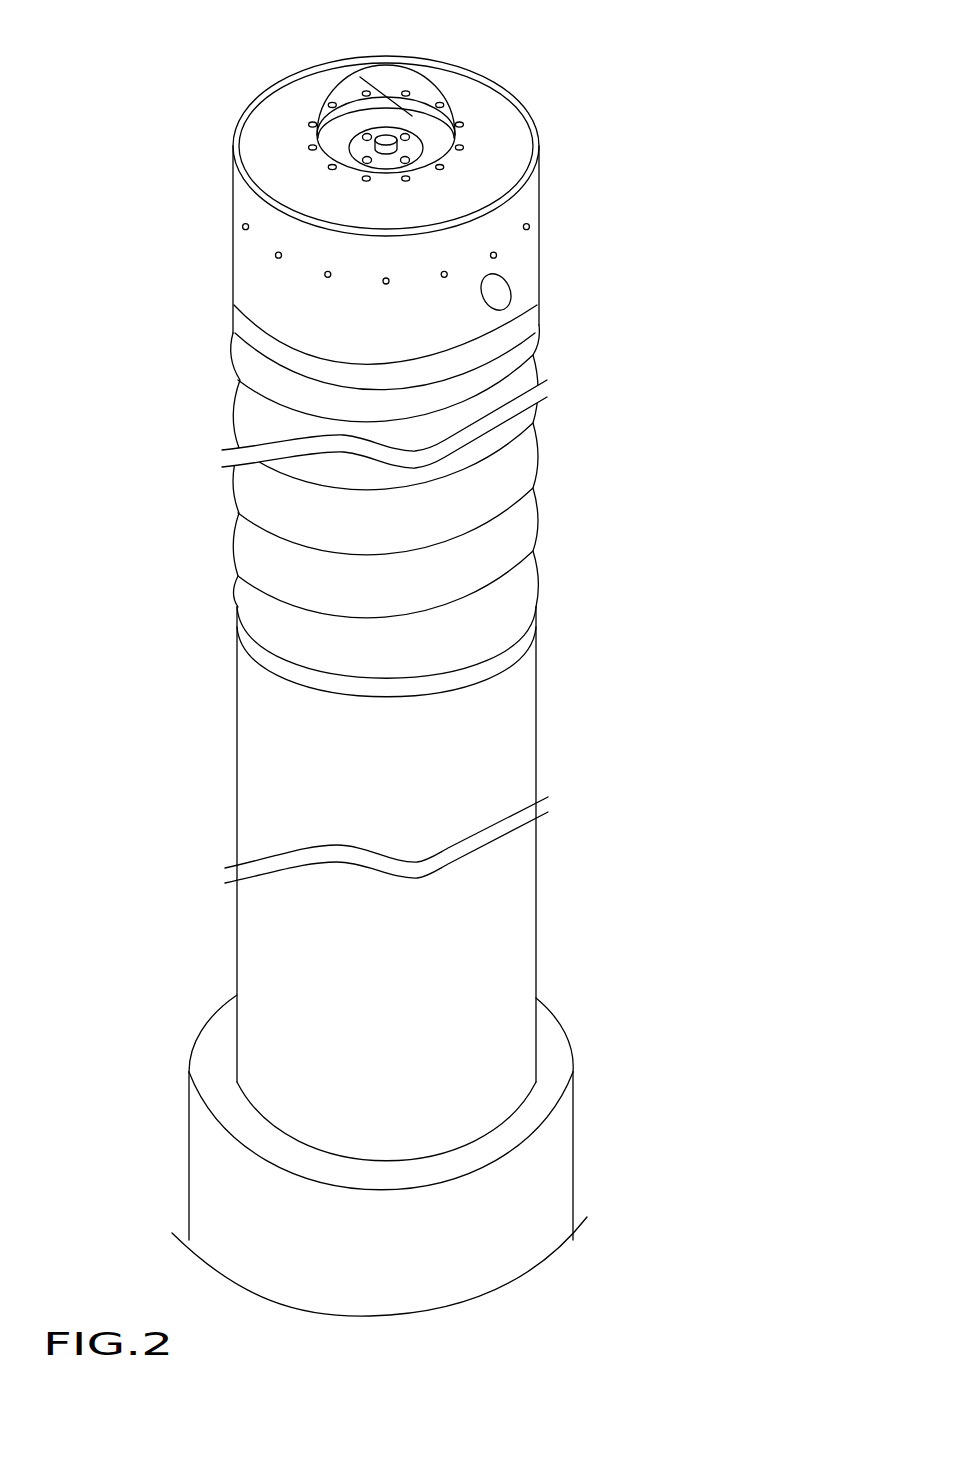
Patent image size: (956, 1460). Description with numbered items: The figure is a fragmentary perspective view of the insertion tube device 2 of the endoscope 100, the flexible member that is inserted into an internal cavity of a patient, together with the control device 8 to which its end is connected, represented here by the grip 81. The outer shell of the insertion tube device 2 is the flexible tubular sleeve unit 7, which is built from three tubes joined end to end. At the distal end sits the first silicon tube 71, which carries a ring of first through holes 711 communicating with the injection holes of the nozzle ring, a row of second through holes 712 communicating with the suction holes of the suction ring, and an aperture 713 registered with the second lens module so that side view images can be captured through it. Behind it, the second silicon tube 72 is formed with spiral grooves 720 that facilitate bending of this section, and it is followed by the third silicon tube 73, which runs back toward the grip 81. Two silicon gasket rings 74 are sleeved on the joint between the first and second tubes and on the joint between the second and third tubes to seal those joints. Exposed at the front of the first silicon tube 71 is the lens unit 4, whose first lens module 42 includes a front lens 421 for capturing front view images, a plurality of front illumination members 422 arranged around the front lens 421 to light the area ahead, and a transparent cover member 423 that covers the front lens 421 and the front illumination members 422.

The endoscope 100 is at (337, 684).
The insertion tube device 2 is at (376, 541).
The tubular sleeve unit 7 is at (388, 562).
The first silicon tube 71 is at (388, 188).
The first through holes 711 is at (312, 146).
The second through holes 712 is at (278, 254).
The aperture 713 is at (510, 280).
The silicon gasket rings 74 is at (533, 310).
The second silicon tube 72 is at (428, 471).
The spiral grooves 720 is at (490, 584).
The third silicon tube 73 is at (503, 927).
The lens unit 4 is at (425, 86).
The first lens module 42 is at (378, 67).
The front lens 421 is at (387, 140).
The front illumination members 422 is at (408, 158).
The transparent cover member 423 is at (369, 72).
The control device 8 is at (379, 1181).
The grip 81 is at (378, 1296).